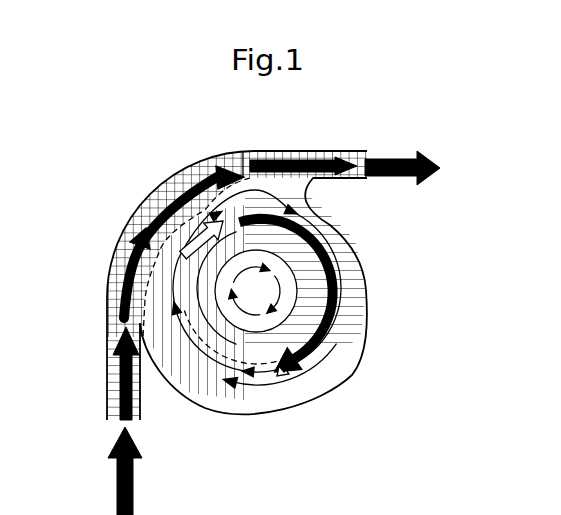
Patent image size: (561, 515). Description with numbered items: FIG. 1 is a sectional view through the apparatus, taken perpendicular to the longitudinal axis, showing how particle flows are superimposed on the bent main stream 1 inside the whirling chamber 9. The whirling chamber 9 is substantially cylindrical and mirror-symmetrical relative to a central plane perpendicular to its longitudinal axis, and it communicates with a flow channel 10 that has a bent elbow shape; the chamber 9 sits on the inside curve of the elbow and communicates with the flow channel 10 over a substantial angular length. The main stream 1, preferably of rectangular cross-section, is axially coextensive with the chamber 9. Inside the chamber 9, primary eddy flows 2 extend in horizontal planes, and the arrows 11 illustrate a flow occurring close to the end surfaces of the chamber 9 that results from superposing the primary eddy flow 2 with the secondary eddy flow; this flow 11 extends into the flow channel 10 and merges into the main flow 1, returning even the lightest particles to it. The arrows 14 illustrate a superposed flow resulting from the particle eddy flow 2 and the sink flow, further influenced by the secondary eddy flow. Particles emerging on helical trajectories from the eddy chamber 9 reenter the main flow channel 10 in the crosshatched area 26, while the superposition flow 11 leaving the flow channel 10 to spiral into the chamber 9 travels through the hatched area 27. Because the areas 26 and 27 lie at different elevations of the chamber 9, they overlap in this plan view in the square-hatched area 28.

The main stream 1 is at (153, 190).
The primary eddy flows 2 is at (318, 293).
The whirling chamber 9 is at (363, 334).
The flow channel 10 is at (190, 172).
The flow arrows 11 is at (243, 190).
The arrows 14 is at (238, 302).
The crosshatched area 26 is at (152, 293).
The hatched area 27 is at (307, 219).
The square-hatched area 28 is at (176, 200).